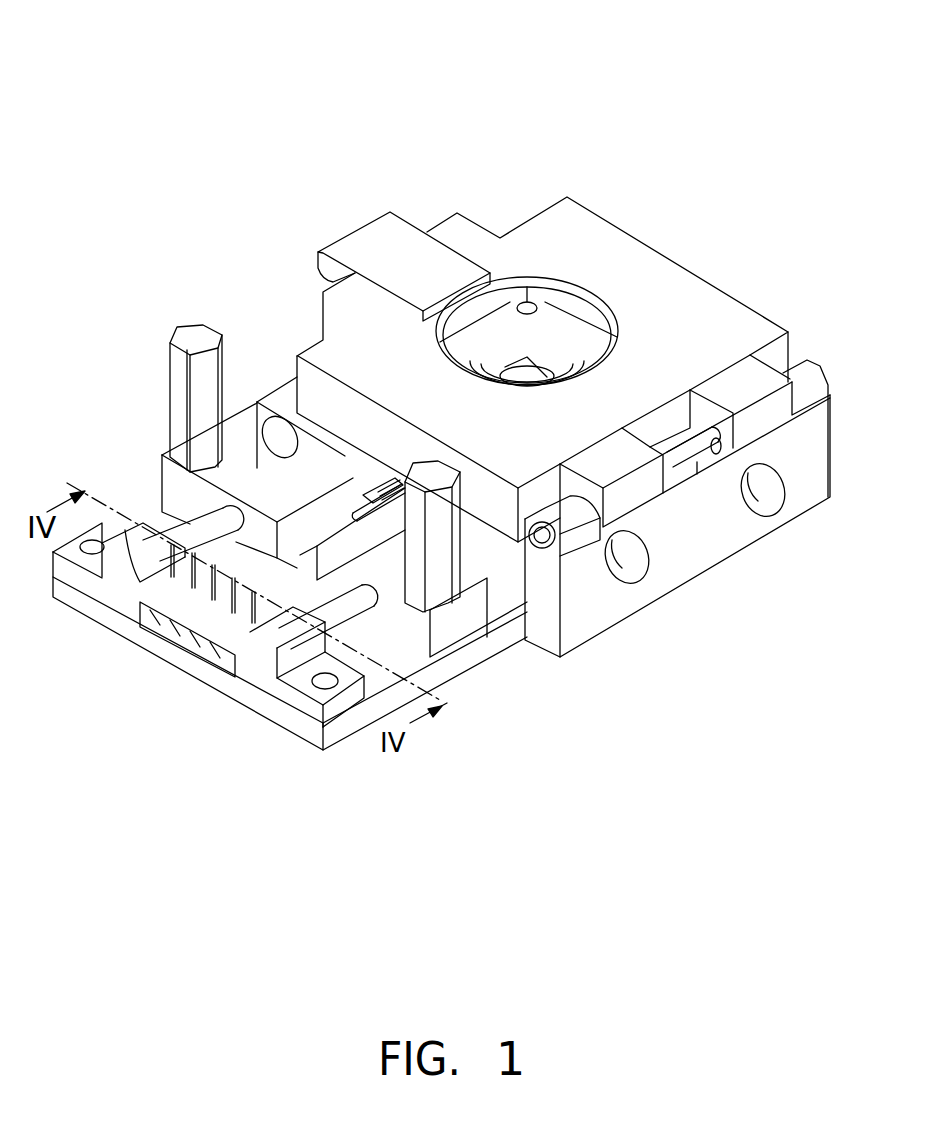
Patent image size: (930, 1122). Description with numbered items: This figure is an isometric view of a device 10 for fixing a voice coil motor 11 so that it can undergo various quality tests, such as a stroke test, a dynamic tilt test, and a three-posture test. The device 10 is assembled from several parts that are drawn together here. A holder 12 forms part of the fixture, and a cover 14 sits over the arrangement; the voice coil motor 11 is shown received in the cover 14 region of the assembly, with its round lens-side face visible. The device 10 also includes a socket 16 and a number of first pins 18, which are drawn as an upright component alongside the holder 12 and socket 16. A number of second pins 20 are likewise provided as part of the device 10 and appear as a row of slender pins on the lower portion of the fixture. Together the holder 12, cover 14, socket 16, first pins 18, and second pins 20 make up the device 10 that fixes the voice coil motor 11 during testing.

The device 10 is at (278, 59).
The voice coil motor 11 is at (552, 356).
The holder 12 is at (278, 400).
The cover 14 is at (583, 233).
The socket 16 is at (448, 628).
The first pins 18 is at (375, 512).
The second pins 20 is at (217, 585).